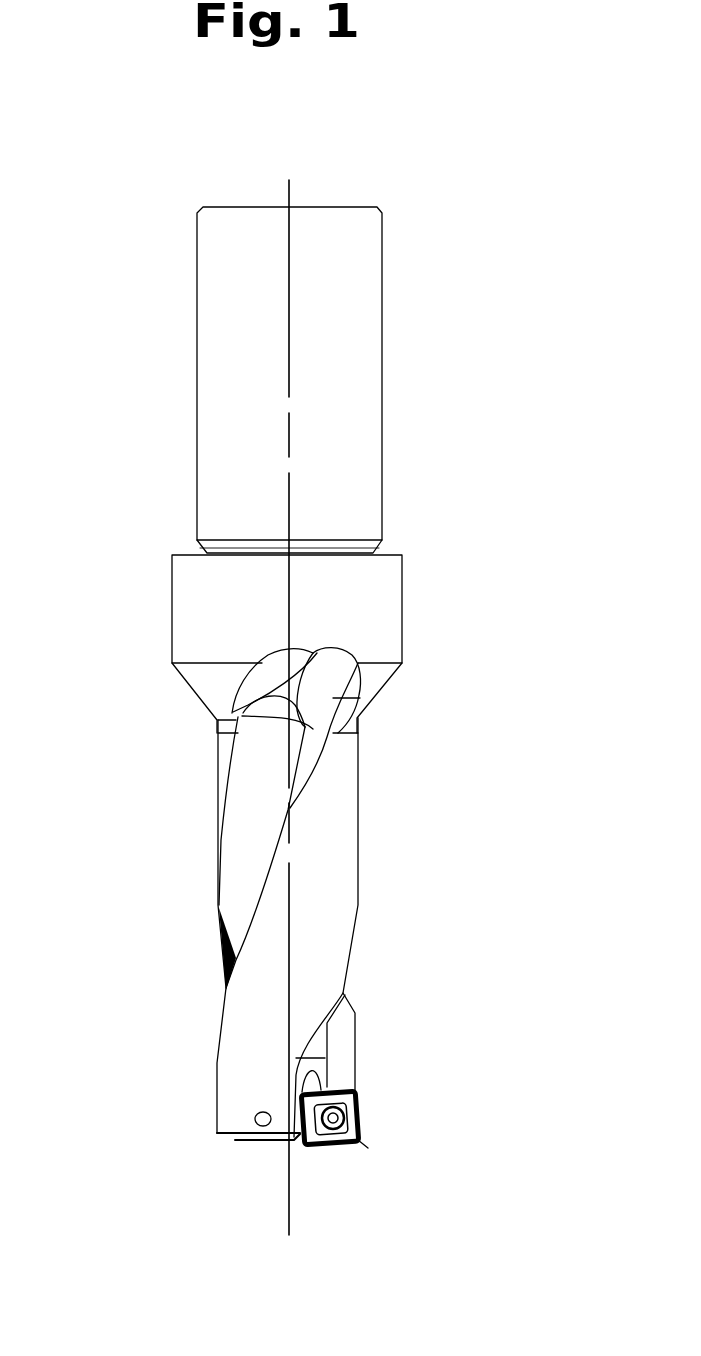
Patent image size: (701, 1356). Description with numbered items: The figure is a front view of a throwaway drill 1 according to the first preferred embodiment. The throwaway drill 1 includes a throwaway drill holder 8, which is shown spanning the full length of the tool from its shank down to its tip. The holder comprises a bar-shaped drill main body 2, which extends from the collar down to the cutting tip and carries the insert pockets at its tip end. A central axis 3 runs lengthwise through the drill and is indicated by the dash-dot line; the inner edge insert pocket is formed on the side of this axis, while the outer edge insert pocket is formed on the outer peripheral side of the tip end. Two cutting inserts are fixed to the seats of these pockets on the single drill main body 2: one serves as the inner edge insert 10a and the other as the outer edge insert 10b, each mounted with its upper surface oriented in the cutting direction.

The throwaway drill 1 is at (428, 305).
The drill main body 2 is at (445, 553).
The central axis 3 is at (290, 1213).
The throwaway drill holder 8 is at (153, 208).
The inner edge insert 10a is at (250, 1140).
The outer edge insert 10b is at (360, 1141).